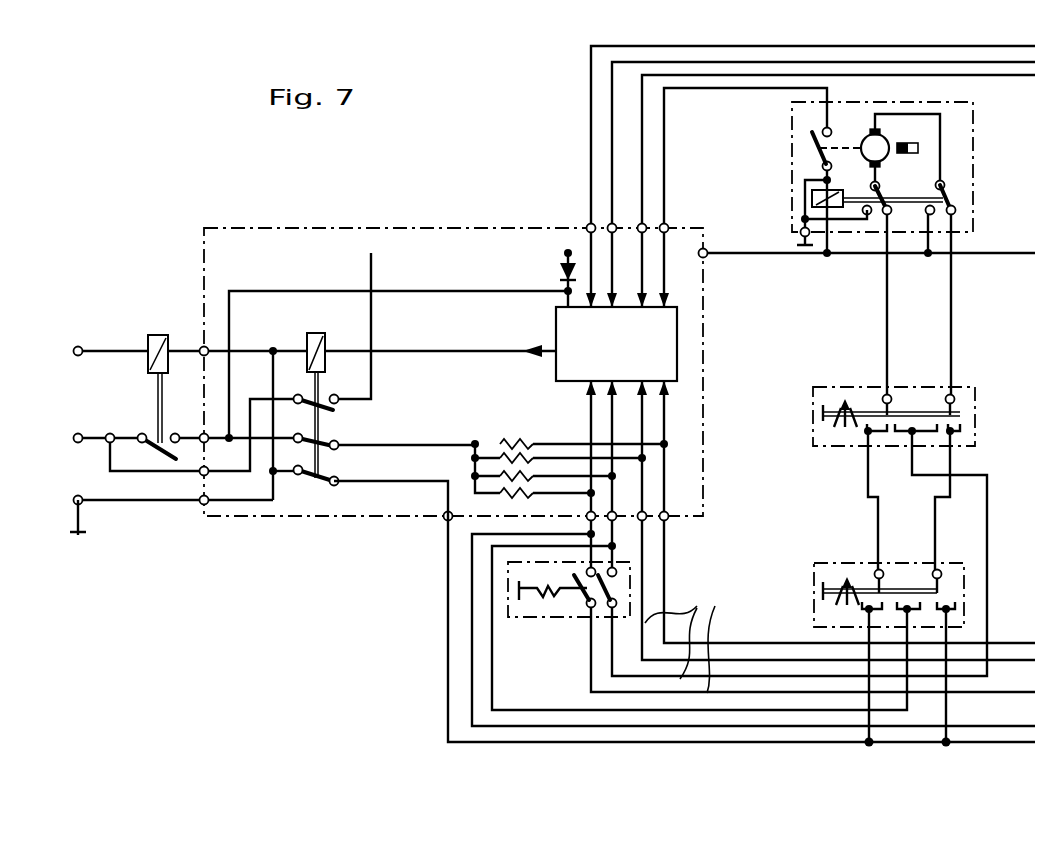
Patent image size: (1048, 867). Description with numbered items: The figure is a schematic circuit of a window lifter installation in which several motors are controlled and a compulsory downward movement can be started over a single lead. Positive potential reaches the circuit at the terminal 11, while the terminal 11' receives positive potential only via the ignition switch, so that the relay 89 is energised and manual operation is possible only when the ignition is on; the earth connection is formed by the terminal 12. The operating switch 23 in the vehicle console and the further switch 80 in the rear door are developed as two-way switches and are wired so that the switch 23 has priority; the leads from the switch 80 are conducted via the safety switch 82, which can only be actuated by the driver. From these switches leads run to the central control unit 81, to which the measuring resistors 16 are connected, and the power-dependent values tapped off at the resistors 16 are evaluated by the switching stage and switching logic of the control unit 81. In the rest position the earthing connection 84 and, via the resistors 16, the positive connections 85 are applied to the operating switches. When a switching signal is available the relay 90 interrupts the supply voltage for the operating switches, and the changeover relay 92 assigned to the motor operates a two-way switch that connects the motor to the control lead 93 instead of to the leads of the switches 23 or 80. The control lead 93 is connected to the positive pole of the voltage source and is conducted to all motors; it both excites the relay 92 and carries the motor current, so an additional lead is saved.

The terminal 11 is at (84, 417).
The terminal 11' is at (89, 326).
The earth terminal 12 is at (78, 536).
The measuring resistor 16 is at (500, 428).
The operating switch 23 is at (956, 588).
The switch 80 is at (966, 393).
The central control unit 81 is at (693, 316).
The safety switch 82 is at (543, 608).
The earthing connection 84 is at (447, 580).
The positive connections 85 is at (668, 588).
The relay 89 is at (157, 333).
The relay 90 is at (326, 362).
The changeover relay 92 is at (812, 196).
The control lead 93 is at (1000, 255).